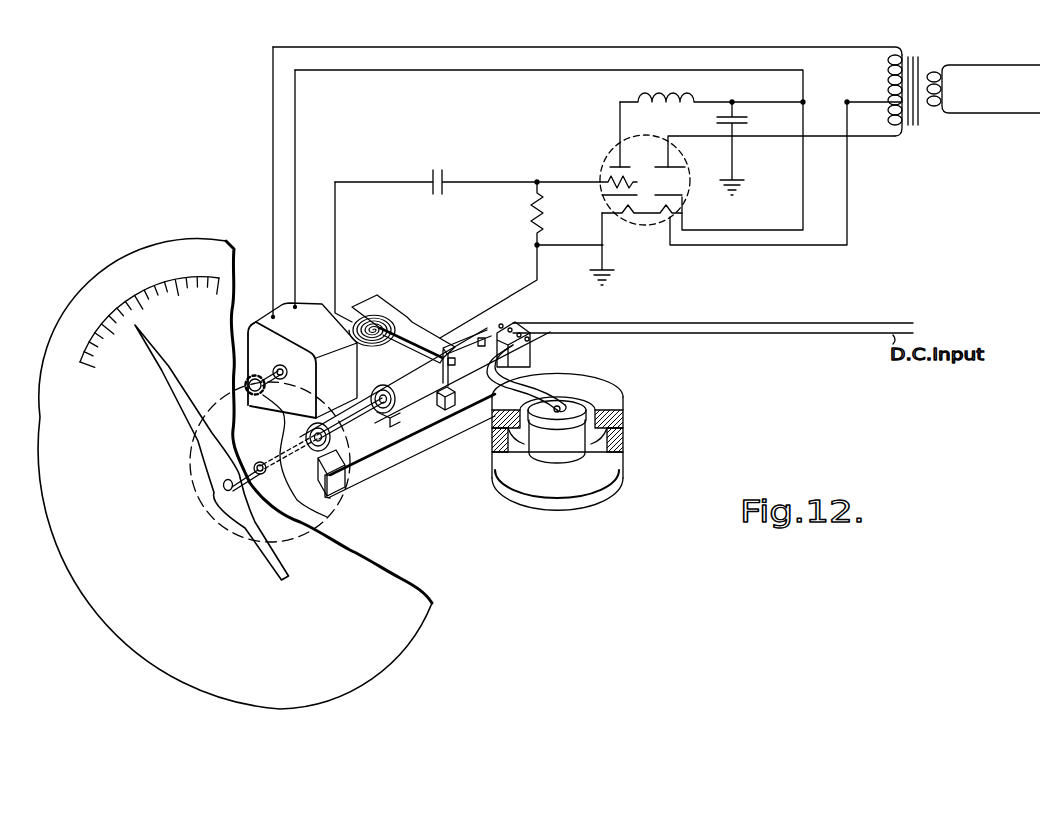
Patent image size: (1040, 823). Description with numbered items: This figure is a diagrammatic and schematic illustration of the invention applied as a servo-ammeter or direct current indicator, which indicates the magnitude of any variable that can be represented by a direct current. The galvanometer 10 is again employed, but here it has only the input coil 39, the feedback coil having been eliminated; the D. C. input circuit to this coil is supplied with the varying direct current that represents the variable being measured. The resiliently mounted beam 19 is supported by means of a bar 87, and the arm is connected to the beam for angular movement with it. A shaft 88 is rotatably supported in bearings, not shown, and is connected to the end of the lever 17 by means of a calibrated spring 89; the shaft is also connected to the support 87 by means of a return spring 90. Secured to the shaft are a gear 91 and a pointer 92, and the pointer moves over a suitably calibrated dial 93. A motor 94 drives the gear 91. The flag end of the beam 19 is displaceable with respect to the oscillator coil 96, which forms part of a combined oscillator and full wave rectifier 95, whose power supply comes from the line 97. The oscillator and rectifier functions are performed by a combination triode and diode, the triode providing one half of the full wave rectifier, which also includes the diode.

The galvanometer 10 is at (582, 441).
The lever 17 is at (499, 322).
The beam 19 is at (430, 332).
The input coil 39 is at (562, 440).
The bar 87 is at (420, 445).
The shaft 88 is at (347, 421).
The calibrated spring 89 is at (385, 386).
The return spring 90 is at (353, 464).
The gear 91 is at (326, 516).
The pointer 92 is at (152, 345).
The dial 93 is at (218, 247).
The motor 94 is at (294, 302).
The combined oscillator and full wave rectifier 95 is at (692, 192).
The oscillator coil 96 is at (384, 306).
The line 97 is at (964, 95).